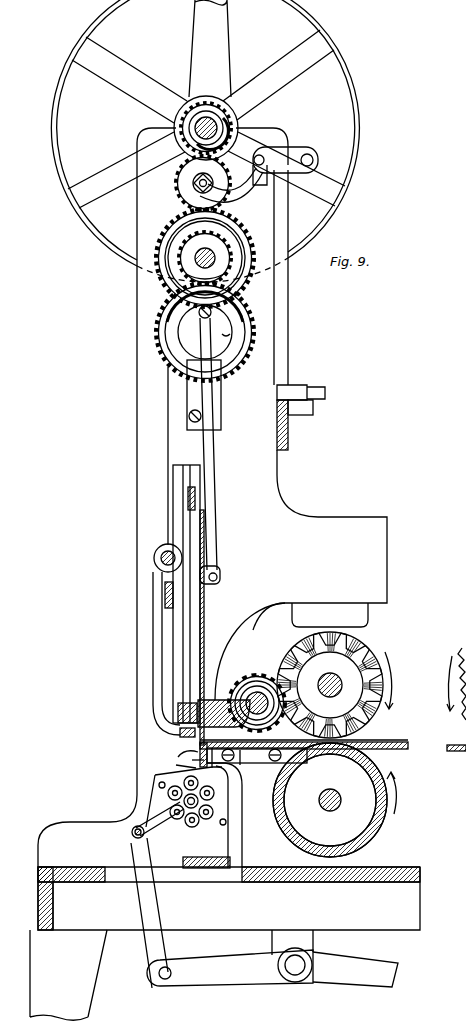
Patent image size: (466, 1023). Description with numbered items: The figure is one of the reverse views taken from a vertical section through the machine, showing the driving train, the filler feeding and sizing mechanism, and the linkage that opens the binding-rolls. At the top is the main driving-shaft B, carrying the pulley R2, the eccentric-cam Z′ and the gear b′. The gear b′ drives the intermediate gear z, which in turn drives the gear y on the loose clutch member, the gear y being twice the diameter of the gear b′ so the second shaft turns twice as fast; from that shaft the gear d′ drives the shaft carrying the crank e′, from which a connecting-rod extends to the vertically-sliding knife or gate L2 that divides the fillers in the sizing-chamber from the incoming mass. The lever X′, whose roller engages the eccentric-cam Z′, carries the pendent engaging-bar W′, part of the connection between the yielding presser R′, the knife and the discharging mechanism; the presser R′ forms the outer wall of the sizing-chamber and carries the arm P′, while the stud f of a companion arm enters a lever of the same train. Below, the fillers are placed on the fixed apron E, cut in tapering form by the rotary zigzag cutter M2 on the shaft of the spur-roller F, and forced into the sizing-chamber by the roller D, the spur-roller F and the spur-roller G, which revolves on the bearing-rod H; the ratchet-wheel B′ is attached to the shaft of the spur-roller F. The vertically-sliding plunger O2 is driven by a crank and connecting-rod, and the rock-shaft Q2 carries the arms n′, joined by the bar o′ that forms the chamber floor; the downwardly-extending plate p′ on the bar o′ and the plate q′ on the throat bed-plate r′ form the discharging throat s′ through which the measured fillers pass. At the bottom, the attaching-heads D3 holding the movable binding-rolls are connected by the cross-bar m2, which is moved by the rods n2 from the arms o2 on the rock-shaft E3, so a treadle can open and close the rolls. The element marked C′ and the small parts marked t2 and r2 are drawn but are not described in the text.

The pulley R2 is at (373, 121).
The eccentric-cam Z′ is at (220, 96).
The gear b′ is at (232, 120).
The main driving-shaft B is at (198, 136).
The lever X′ is at (278, 146).
The pendent engaging-bar W′ is at (260, 178).
The intermediate gear z is at (178, 180).
The gear y is at (160, 236).
The gear d′ is at (236, 238).
The throat bed-plate r′ is at (222, 258).
The crank gear C′ is at (246, 316).
The arm P′ is at (205, 332).
The crank e′ is at (232, 334).
The stud f is at (214, 440).
The vertically-sliding plunger O2 is at (188, 497).
The rock-shaft Q2 is at (160, 558).
The swinging yielding presser R′ is at (164, 597).
The vertically-sliding knife or gate L2 is at (204, 592).
The arms n′ is at (160, 654).
The bearing-rod H is at (257, 703).
The spur-roller G is at (259, 670).
The spur-roller F is at (330, 685).
The rotary zigzag cutter M2 is at (384, 671).
The fixed apron E is at (333, 749).
The roller D is at (334, 800).
The ratchet-wheel B′ is at (456, 673).
The attaching-heads D3 is at (170, 800).
The pin t2 is at (167, 779).
The pin r2 is at (221, 812).
The bar o′ is at (178, 755).
The downwardly-extending plate p′ is at (176, 765).
The discharging throat or passage s′ is at (190, 759).
The plate q′ is at (229, 764).
The cross-bar m2 is at (132, 835).
The rods n2 is at (150, 906).
The arms o2 is at (272, 968).
The rock-shaft E3 is at (295, 972).